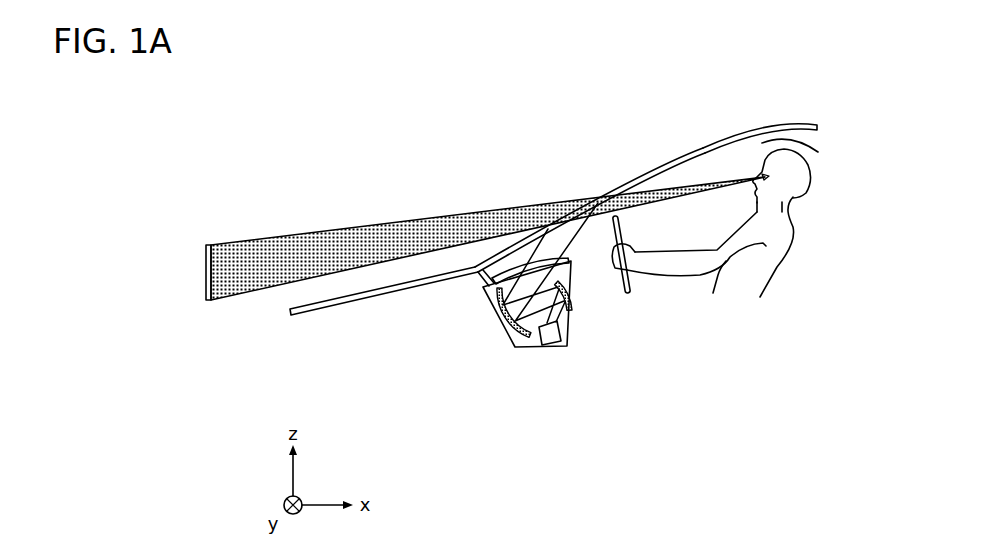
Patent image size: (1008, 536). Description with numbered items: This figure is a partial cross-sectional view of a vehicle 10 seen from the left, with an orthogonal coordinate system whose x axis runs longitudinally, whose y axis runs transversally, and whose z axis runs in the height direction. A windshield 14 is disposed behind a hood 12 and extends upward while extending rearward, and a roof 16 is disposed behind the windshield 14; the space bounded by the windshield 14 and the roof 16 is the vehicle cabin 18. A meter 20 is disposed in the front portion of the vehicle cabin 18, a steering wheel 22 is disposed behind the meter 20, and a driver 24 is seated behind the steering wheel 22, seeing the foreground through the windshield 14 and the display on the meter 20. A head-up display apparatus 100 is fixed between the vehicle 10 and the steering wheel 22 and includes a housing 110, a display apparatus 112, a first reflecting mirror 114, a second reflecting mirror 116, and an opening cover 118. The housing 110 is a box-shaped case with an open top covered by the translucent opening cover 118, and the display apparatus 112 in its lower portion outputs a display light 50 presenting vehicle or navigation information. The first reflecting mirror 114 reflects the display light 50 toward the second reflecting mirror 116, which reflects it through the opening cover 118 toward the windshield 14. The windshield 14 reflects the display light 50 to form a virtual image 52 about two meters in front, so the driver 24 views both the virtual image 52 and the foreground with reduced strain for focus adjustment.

The vehicle 10 is at (517, 528).
The hood 12 is at (372, 298).
The windshield 14 is at (673, 160).
The roof 16 is at (780, 128).
The vehicle cabin 18 is at (819, 152).
The meter 20 is at (478, 289).
The steering wheel 22 is at (636, 288).
The driver 24 is at (787, 262).
The display light 50 is at (322, 242).
The virtual image 52 is at (205, 272).
The head-up display apparatus 100 is at (556, 287).
The housing 110 is at (577, 337).
The display apparatus 112 is at (548, 342).
The first reflecting mirror 114 is at (575, 283).
The second reflecting mirror 116 is at (500, 322).
The opening cover 118 is at (513, 270).